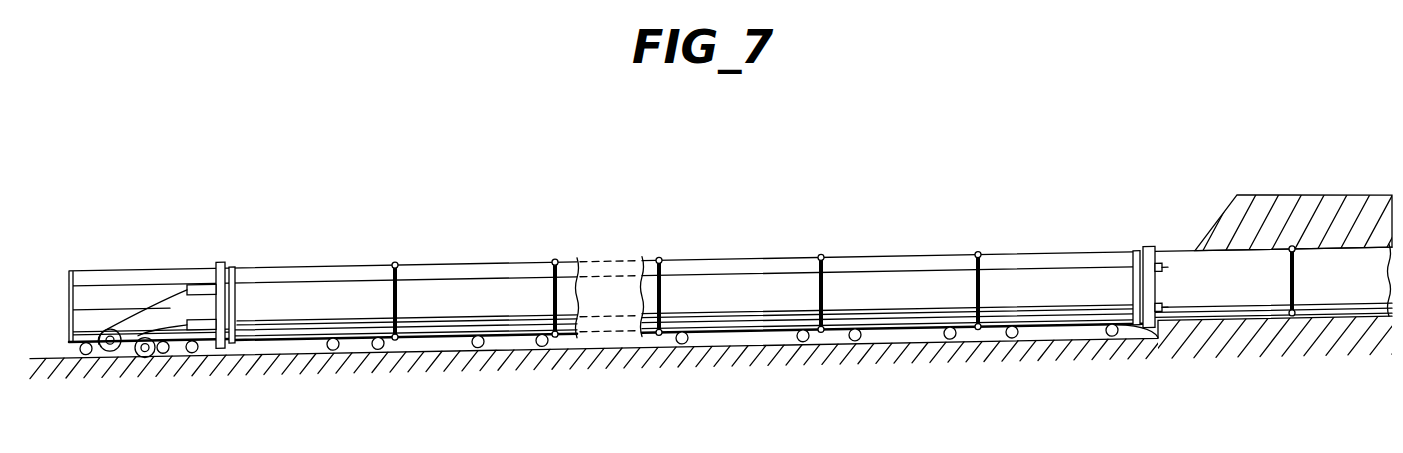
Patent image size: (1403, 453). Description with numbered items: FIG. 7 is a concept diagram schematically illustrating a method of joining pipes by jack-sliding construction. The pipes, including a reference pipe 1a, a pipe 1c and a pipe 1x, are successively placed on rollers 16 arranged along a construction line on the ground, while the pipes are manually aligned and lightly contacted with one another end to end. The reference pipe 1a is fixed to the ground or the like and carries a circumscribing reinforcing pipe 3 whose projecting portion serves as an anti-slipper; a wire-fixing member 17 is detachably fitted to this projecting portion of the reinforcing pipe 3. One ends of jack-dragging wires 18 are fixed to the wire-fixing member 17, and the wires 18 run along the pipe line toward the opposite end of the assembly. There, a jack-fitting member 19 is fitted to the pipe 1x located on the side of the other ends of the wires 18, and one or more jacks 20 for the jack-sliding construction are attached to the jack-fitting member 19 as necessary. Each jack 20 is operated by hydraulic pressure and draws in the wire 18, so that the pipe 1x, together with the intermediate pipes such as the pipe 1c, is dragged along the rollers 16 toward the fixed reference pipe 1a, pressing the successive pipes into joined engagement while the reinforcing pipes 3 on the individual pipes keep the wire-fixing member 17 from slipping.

The pipe 1x is at (434, 269).
The reference pipe 1a is at (887, 254).
The pipe 1c is at (1270, 251).
The circumscribing reinforcing pipe 3 is at (762, 265).
The rollers 16 is at (599, 373).
The wire-fixing member 17 is at (1186, 286).
The jack-dragging wires 18 is at (562, 276).
The jack-fitting member 19 is at (217, 278).
The jacks 20 is at (188, 268).